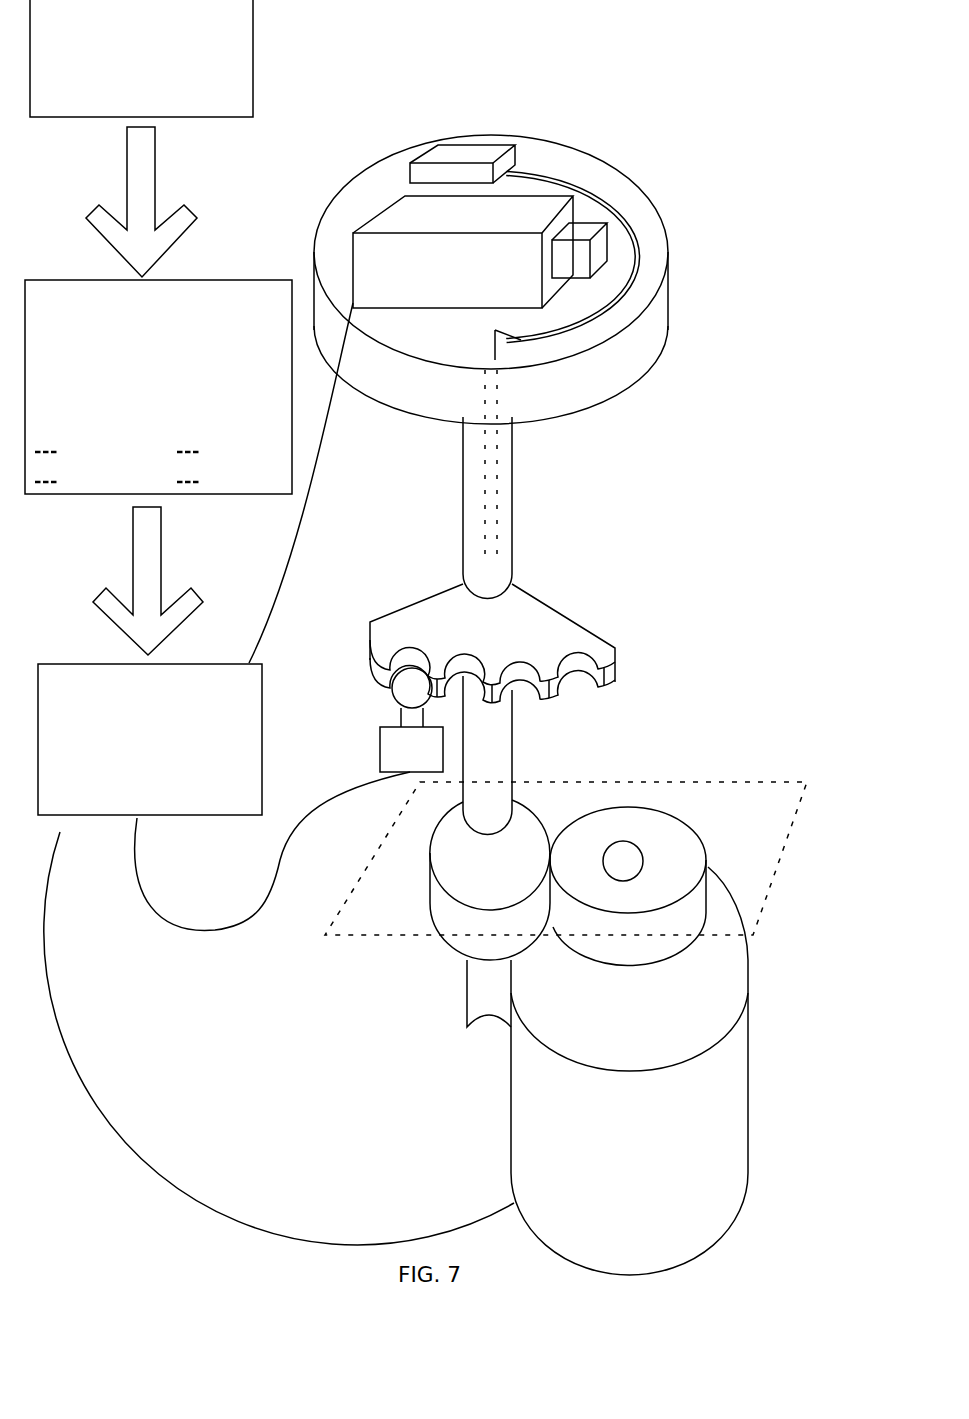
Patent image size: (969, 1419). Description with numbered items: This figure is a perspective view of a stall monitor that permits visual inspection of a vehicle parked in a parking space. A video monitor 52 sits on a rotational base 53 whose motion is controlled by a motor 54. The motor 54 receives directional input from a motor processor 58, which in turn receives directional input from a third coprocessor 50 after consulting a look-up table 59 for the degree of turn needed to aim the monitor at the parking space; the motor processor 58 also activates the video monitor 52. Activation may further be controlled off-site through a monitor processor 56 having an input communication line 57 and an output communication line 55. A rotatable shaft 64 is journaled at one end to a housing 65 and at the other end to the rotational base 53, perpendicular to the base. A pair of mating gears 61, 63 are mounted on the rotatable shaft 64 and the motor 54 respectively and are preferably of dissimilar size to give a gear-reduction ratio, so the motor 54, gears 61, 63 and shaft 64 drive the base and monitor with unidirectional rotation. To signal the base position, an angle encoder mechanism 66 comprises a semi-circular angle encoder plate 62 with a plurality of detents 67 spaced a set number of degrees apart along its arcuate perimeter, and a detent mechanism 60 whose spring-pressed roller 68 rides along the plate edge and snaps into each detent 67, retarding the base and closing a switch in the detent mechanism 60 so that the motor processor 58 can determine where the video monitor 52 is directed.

The third coprocessor 50 is at (82, 119).
The video monitor 52 is at (377, 216).
The rotational base 53 is at (667, 273).
The motor 54 is at (510, 1147).
The output communication line 55 is at (499, 473).
The monitor processor 56 is at (477, 143).
The input communication line 57 is at (488, 515).
The motor processor 58 is at (213, 662).
The look-up table 59 is at (255, 277).
The detent mechanism 60 is at (377, 742).
The mating gear 61 is at (538, 810).
The angle encoder plate 62 is at (573, 622).
The mating gear 63 is at (688, 829).
The rotatable shaft 64 is at (514, 558).
The housing 65 is at (338, 934).
The angle encoder mechanism 66 is at (367, 680).
The detents 67 is at (573, 672).
The roller 68 is at (386, 697).